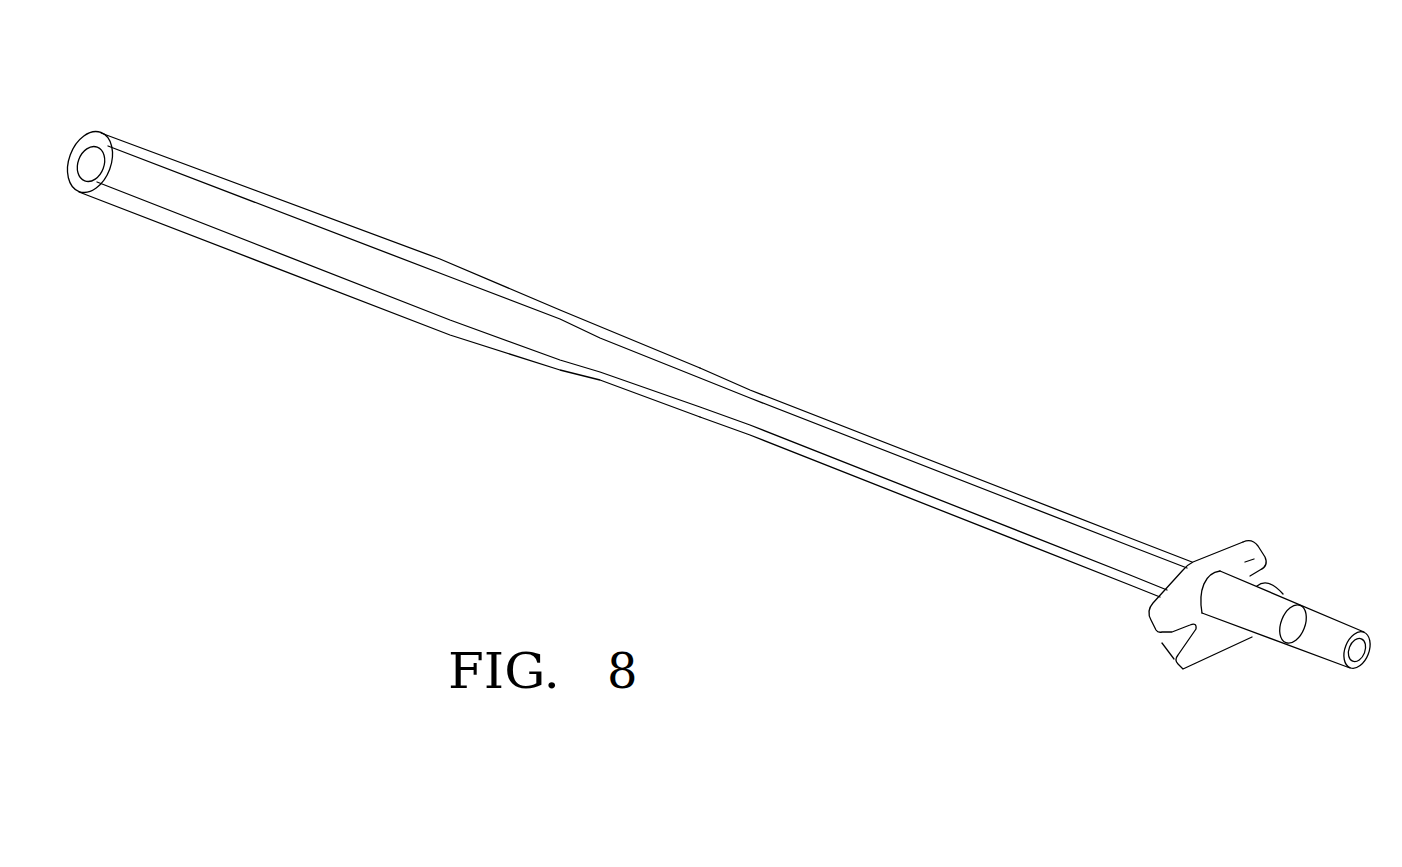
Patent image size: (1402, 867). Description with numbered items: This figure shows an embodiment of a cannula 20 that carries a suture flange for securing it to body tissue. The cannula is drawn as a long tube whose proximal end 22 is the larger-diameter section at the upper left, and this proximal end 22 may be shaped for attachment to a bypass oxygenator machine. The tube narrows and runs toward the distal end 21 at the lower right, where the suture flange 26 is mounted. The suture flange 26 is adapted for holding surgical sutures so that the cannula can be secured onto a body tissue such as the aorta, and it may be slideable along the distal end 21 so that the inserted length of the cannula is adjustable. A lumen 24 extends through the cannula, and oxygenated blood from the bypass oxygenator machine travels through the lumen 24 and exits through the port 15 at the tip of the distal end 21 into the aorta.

The catheter tube 20 is at (807, 408).
The proximal end 22 is at (93, 124).
The lumen 24 is at (863, 460).
The suture flange 26 is at (1254, 560).
The distal end 21 is at (1335, 612).
The port 15 is at (1372, 658).